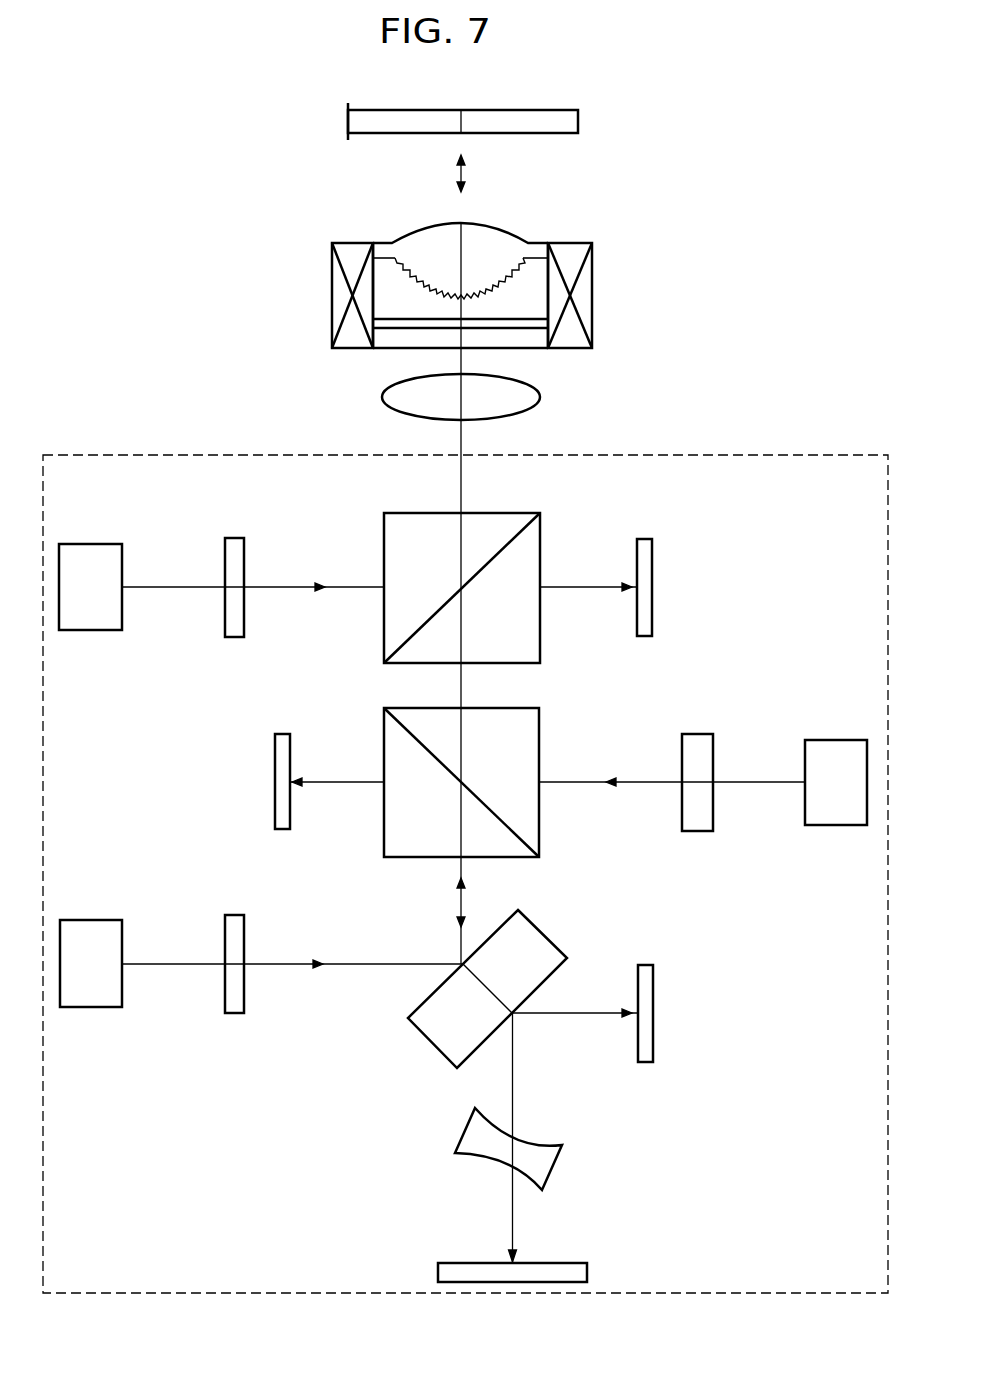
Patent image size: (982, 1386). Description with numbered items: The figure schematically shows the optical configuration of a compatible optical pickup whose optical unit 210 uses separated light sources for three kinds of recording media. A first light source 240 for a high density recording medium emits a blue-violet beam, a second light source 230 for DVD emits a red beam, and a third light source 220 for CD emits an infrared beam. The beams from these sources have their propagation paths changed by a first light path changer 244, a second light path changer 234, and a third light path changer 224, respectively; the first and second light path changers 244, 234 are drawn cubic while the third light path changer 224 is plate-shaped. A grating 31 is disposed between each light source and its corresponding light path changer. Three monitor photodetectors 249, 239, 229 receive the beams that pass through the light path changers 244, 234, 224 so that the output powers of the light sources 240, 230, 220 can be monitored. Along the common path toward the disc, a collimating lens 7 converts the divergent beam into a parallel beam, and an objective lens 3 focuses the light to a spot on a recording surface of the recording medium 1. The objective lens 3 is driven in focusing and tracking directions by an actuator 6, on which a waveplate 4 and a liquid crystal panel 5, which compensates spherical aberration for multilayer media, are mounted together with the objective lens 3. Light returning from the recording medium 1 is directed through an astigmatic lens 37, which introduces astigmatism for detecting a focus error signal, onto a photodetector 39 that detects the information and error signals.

The recording medium 1 is at (555, 90).
The objective lens 3 is at (498, 235).
The waveplate 4 is at (542, 323).
The liquid crystal panel 5 is at (538, 345).
The actuator 6 is at (340, 296).
The collimating lens 7 is at (540, 398).
The optical unit 210 is at (793, 454).
The third light source 220 is at (90, 920).
The second light source 230 is at (835, 740).
The first light source 240 is at (90, 544).
The grating 31 is at (236, 538).
The third light path changer 224 is at (545, 932).
The second light path changer 234 is at (540, 730).
The first light path changer 244 is at (541, 537).
The monitor photodetector 229 is at (653, 1015).
The monitor photodetector 239 is at (275, 782).
The monitor photodetector 249 is at (653, 588).
The astigmatic lens 37 is at (552, 1168).
The photodetector 39 is at (588, 1272).